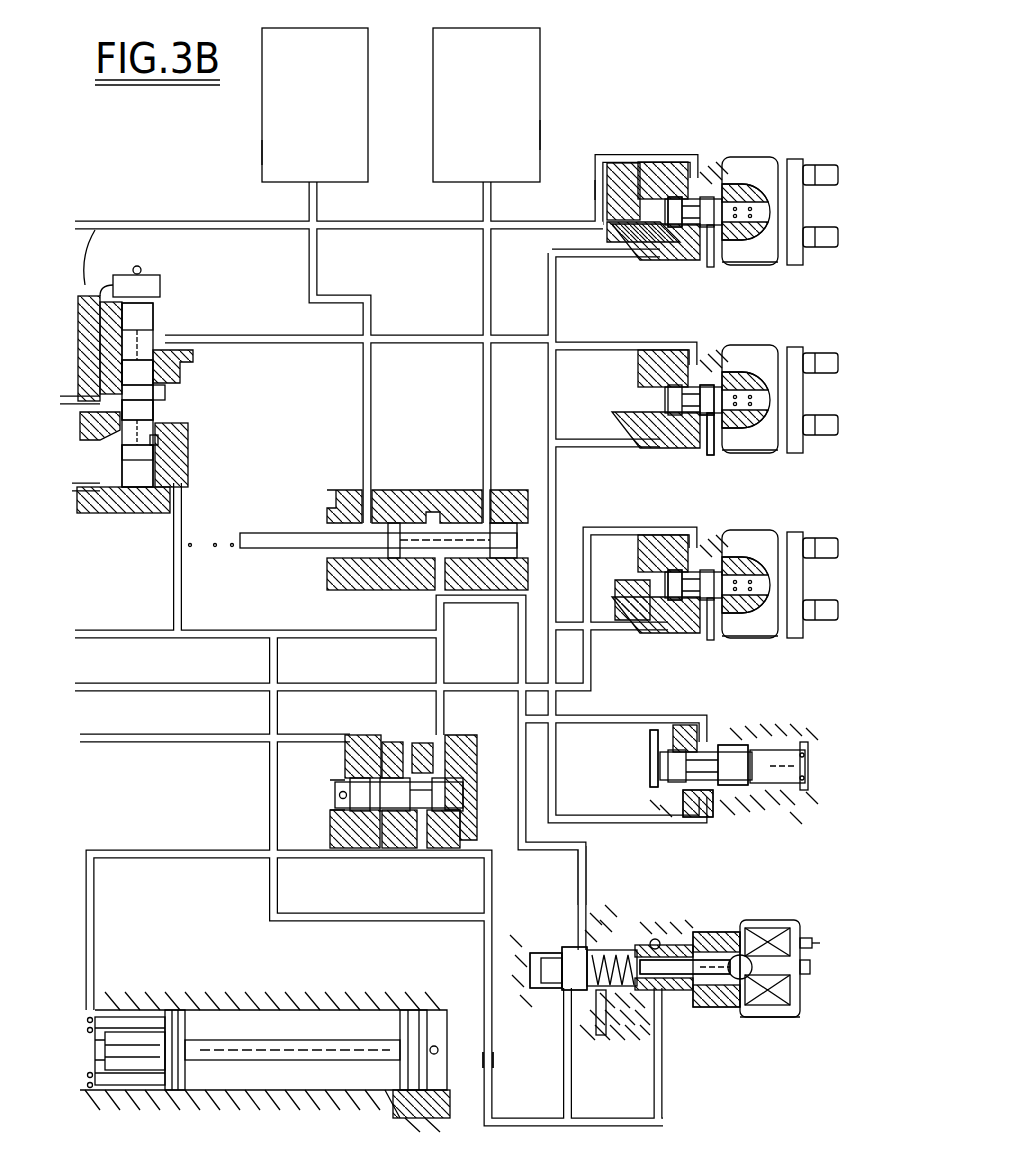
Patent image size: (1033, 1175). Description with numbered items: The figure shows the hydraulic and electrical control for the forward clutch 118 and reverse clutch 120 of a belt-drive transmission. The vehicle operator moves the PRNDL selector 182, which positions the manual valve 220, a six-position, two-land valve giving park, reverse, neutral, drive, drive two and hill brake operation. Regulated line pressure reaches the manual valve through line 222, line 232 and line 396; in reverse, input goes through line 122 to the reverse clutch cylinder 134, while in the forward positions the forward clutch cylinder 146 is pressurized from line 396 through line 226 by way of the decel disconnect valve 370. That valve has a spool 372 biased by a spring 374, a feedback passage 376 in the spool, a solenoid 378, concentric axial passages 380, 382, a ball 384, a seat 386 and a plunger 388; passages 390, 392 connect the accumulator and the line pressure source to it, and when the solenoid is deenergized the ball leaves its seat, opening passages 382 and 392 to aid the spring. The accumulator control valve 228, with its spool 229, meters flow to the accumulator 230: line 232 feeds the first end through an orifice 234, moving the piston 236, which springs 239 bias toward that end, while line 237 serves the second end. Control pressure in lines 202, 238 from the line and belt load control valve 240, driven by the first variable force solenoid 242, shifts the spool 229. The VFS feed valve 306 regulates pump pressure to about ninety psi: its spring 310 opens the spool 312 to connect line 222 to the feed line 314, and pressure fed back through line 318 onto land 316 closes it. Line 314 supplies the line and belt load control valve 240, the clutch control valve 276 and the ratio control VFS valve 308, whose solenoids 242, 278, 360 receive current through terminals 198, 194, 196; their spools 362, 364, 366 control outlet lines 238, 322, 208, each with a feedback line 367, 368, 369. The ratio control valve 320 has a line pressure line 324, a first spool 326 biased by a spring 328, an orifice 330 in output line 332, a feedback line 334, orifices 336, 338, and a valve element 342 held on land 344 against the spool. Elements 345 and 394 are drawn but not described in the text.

The forward clutch 118 is at (518, 28).
The reverse clutch 120 is at (330, 28).
The line 122 is at (309, 203).
The reverse clutch cylinder 134 is at (262, 150).
The forward clutch cylinder 146 is at (542, 130).
The PRNDL selector 182 is at (232, 534).
The terminal 194 is at (820, 360).
The terminal 196 is at (820, 546).
The terminal 198 is at (810, 170).
The line 202 is at (148, 221).
The outlet line 208 is at (601, 527).
The manual valve 220 is at (418, 505).
The line 222 is at (221, 629).
The line 226 is at (483, 200).
The accumulator control valve 228 is at (360, 815).
The spool 229 is at (430, 790).
The accumulator 230 is at (305, 1010).
The line 232 is at (268, 790).
The orifice 234 is at (492, 1059).
The piston 236 is at (186, 1010).
The line 237 is at (376, 988).
The line 238 is at (607, 154).
The springs 239 is at (158, 1010).
The line and belt load control valve 240 is at (630, 232).
The first variable force solenoid 242 is at (765, 265).
The clutch control VFS valve 276 is at (610, 661).
The second variable force solenoid 278 is at (765, 640).
The VFS feed valve 306 is at (634, 775).
The ratio control VFS valve 308 is at (645, 408).
The spring 310 is at (780, 790).
The spool 312 is at (735, 790).
The VFS feed line 314 is at (547, 455).
The land 316 is at (648, 760).
The feedback line 318 is at (690, 818).
The ratio control valve 320 is at (165, 303).
The outlet line 322 is at (262, 341).
The line pressure line 324 is at (175, 410).
The first spool 326 is at (175, 424).
The spring 328 is at (160, 482).
The orifice 330 is at (90, 418).
The output line 332 is at (153, 385).
The feedback line 334 is at (95, 228).
The orifice 336 is at (118, 263).
The orifice 338 is at (105, 508).
The valve element 342 is at (140, 330).
The land 344 is at (160, 290).
The ratio control valve orifice 345 is at (160, 440).
The third variable force solenoid 360 is at (768, 453).
The spool 362 is at (725, 180).
The spool 364 is at (683, 432).
The spool 366 is at (690, 605).
The feedback line 367 is at (594, 188).
The feedback line 368 is at (625, 375).
The feedback line 369 is at (628, 610).
The decel disconnect valve 370 is at (558, 906).
The spool 372 is at (545, 950).
The spring 374 is at (620, 950).
The feedback passage 376 is at (540, 990).
The solenoid 378 is at (792, 1003).
The concentric axial passage 380 is at (668, 960).
The concentric axial passage 382 is at (712, 932).
The ball 384 is at (742, 955).
The seat 386 is at (738, 1017).
The plunger 388 is at (790, 935).
The passage 390 is at (575, 1087).
The passage 392 is at (655, 1090).
The orifice 394 is at (603, 1020).
The line 396 is at (588, 864).